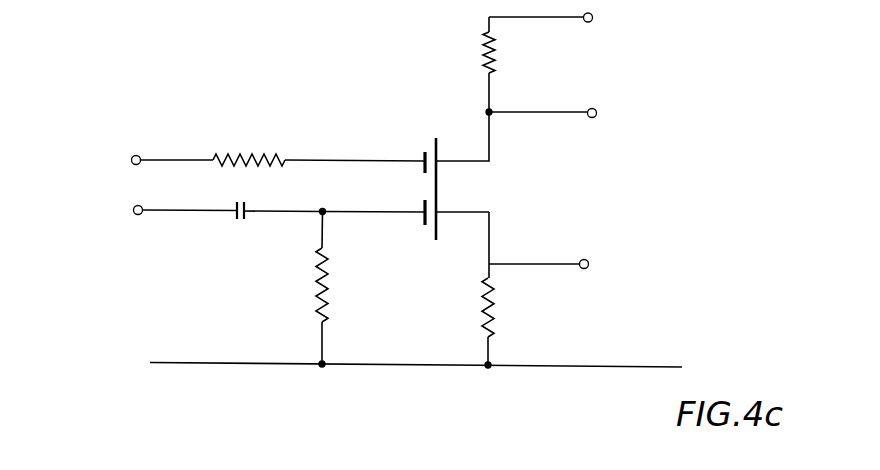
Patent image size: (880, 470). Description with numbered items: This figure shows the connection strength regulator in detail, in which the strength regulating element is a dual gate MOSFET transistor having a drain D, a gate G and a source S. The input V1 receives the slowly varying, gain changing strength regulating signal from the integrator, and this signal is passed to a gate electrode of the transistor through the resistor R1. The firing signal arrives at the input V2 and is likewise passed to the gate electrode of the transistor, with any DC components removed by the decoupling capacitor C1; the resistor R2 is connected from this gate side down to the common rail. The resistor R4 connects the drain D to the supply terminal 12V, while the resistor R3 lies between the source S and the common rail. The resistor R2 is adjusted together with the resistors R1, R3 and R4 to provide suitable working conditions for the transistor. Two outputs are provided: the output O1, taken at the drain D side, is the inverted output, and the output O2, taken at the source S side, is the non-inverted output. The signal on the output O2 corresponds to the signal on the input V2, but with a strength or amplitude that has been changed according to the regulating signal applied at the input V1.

The +12V supply terminal 12V is at (626, 22).
The resistor R4 is at (513, 53).
The output O1 is at (566, 115).
The drain of transistor D is at (437, 170).
The input V1 is at (145, 159).
The resistor R1 is at (319, 142).
The input V2 is at (157, 212).
The decoupling capacitor C1 is at (274, 232).
The gate of transistor G is at (374, 196).
The source of transistor S is at (435, 237).
The resistor R2 is at (341, 288).
The output O2 is at (564, 266).
The resistor R3 is at (511, 307).